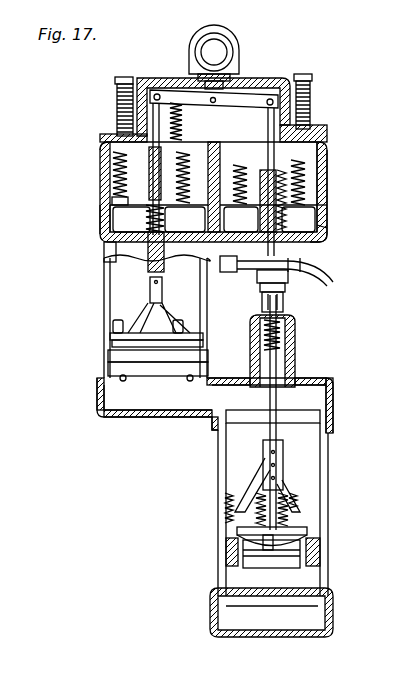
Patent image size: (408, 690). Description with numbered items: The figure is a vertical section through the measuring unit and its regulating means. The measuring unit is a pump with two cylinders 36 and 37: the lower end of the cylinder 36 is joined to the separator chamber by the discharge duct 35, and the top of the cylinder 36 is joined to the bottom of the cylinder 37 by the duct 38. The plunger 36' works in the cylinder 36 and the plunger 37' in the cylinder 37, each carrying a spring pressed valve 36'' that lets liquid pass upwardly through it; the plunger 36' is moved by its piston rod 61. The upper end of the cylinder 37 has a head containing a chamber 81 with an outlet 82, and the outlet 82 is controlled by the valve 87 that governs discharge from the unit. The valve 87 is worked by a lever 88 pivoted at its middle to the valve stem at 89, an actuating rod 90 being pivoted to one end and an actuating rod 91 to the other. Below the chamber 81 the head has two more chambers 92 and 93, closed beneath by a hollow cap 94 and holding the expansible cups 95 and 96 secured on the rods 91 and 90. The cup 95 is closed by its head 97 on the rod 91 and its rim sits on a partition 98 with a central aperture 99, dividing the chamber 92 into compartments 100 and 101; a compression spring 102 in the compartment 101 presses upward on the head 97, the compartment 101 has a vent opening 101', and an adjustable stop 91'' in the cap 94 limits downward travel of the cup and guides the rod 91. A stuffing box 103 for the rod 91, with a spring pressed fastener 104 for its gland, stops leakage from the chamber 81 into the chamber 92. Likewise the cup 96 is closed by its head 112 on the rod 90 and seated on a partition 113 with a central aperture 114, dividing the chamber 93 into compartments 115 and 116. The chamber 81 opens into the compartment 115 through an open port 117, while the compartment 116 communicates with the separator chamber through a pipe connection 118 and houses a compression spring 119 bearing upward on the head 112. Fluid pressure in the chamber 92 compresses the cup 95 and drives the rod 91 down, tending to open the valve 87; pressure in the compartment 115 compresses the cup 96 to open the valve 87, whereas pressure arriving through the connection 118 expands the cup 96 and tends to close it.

The discharge duct 35 is at (280, 628).
The cylinder 36 is at (287, 503).
The plunger 36' is at (238, 549).
The spring pressed valve 36'' is at (296, 493).
The cylinder 37 is at (141, 316).
The plunger 37' is at (158, 329).
The duct 38 is at (190, 406).
The piston rod 61 is at (283, 314).
The chamber 81 is at (266, 87).
The outlet 82 is at (214, 49).
The valve 87 is at (236, 76).
The lever 88 is at (191, 90).
The pivot 89 is at (214, 102).
The actuating rod 90 is at (278, 182).
The actuating rod 91 is at (122, 156).
The adjustable stop 91'' is at (151, 252).
The chamber 92 is at (115, 163).
The chamber 93 is at (320, 158).
The hollow cap 94 is at (323, 230).
The expansible cup 95 is at (115, 190).
The expansible cup 96 is at (308, 182).
The head 97 is at (103, 143).
The partition 98 is at (105, 212).
The central aperture 99 is at (138, 189).
The compartment 100 is at (110, 176).
The compartment 101 is at (90, 249).
The vent opening 101' is at (271, 268).
The compression spring 102 is at (176, 221).
The stuffing box 103 is at (136, 140).
The spring pressed fastener 104 is at (170, 104).
The head 112 is at (253, 177).
The partition 113 is at (321, 214).
The central aperture 114 is at (244, 219).
The compartment 115 is at (309, 140).
The compartment 116 is at (319, 238).
The open port 117 is at (311, 117).
The pipe connection 118 is at (333, 284).
The compression spring 119 is at (282, 221).